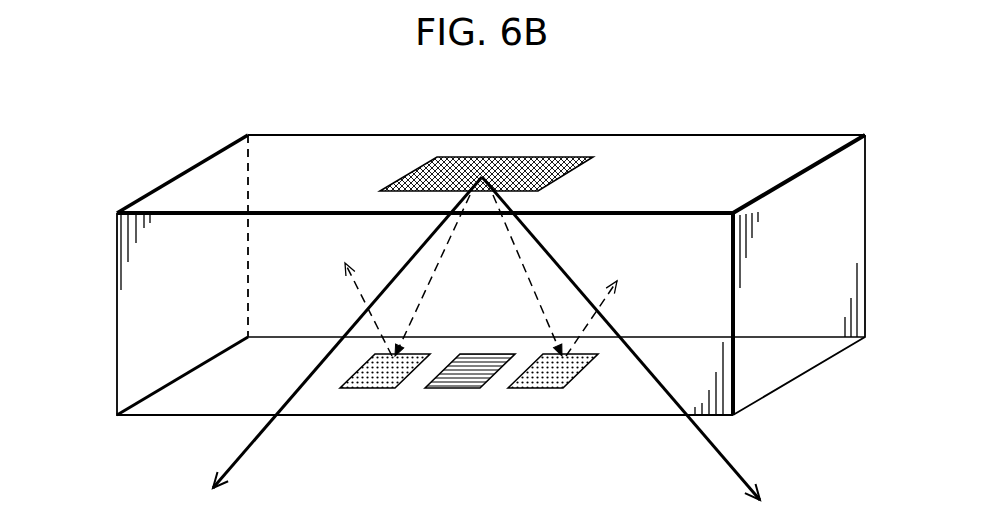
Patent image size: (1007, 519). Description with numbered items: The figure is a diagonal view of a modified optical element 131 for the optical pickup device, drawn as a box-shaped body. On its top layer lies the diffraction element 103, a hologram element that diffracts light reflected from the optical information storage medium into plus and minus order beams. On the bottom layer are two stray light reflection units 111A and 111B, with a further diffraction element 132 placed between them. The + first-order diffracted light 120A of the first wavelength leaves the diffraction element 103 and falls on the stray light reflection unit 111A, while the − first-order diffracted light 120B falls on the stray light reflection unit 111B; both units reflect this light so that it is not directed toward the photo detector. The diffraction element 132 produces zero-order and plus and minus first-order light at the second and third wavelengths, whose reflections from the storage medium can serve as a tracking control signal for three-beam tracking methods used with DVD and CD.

The diffraction element 103 is at (447, 157).
The stray light reflection unit 111A is at (378, 388).
The stray light reflection unit 111B is at (542, 388).
The + first-order diffracted light 120A is at (430, 286).
The − first-order diffracted light 120B is at (528, 271).
The optical element 131 is at (145, 332).
The diffraction element 132 is at (462, 388).